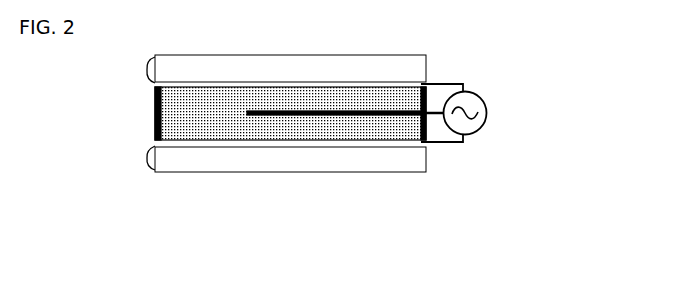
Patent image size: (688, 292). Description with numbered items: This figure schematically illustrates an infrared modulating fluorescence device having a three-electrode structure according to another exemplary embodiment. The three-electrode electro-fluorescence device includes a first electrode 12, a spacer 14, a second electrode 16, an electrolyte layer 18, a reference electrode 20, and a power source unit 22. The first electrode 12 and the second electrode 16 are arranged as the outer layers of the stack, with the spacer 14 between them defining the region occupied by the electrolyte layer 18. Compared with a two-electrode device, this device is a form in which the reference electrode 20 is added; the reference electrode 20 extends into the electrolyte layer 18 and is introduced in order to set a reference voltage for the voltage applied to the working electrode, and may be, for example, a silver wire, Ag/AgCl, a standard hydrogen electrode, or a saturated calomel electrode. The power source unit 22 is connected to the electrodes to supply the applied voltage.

The first electrode 12 is at (145, 71).
The spacer 14 is at (150, 113).
The second electrode 16 is at (145, 155).
The electrolyte layer 18 is at (210, 128).
The reference electrode 20 is at (322, 120).
The power source unit 22 is at (492, 112).